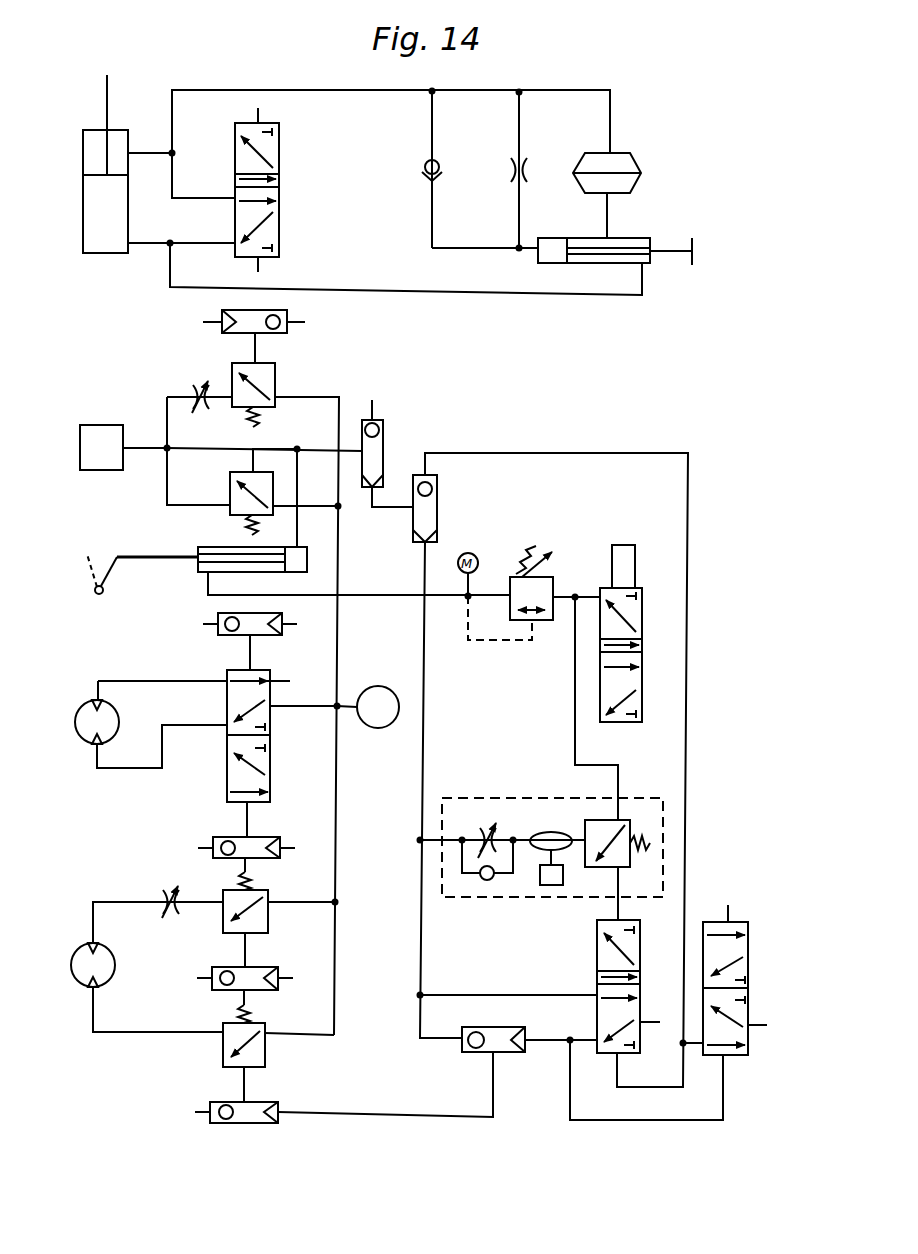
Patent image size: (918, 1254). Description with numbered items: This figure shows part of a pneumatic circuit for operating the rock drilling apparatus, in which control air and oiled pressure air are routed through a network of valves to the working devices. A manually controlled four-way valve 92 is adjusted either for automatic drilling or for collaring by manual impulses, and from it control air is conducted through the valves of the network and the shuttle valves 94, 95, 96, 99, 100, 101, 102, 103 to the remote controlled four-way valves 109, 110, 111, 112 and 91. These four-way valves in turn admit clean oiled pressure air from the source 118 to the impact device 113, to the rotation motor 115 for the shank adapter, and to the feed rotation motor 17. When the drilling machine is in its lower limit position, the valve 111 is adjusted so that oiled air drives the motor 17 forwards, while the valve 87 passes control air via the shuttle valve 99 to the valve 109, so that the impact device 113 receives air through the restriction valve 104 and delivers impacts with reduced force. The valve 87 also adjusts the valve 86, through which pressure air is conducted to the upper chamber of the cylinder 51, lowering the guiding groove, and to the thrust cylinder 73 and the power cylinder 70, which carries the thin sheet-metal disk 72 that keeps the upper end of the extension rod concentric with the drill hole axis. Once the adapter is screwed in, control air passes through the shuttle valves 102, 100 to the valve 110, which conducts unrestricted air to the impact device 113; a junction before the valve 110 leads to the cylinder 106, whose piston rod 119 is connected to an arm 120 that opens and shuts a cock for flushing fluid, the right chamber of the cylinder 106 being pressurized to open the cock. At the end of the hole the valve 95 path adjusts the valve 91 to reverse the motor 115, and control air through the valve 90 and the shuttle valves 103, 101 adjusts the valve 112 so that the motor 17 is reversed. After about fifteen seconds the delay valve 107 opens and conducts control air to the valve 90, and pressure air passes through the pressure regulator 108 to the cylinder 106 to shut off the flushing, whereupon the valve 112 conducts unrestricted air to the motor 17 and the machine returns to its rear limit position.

The feed rotation motor 17 is at (114, 950).
The cylinder 51 is at (112, 253).
The power cylinder 70 is at (555, 238).
The thin sheet-metal disk 72 is at (692, 250).
The thrust cylinder 73 is at (636, 158).
The valve 86 is at (279, 140).
The valve 87 is at (739, 920).
The valve 90 is at (597, 955).
The remote controlled four-way valve 91 is at (270, 800).
The manually controlled four-way valve 92 is at (625, 722).
The shuttle valve 94 is at (270, 635).
The shuttle valve 95 is at (270, 858).
The shuttle valve 96 is at (270, 990).
The shuttle valve 99 is at (290, 333).
The shuttle valve 100 is at (383, 425).
The shuttle valve 101 is at (212, 1102).
The shuttle valve 102 is at (437, 480).
The shuttle valve 103 is at (505, 1052).
The restriction valve 104 is at (194, 393).
The cylinder 106 is at (230, 546).
The delay valve 107 is at (518, 798).
The pressure regulator 108 is at (507, 577).
The remote controlled four-way valve 109 is at (275, 378).
The remote controlled four-way valve 110 is at (232, 478).
The remote controlled four-way valve 111 is at (268, 928).
The remote controlled four-way valve 112 is at (265, 1062).
The impact device 113 is at (105, 425).
The rotation motor 115 is at (118, 708).
The source 118 is at (380, 686).
The piston rod 119 is at (155, 557).
The arm 120 is at (110, 572).